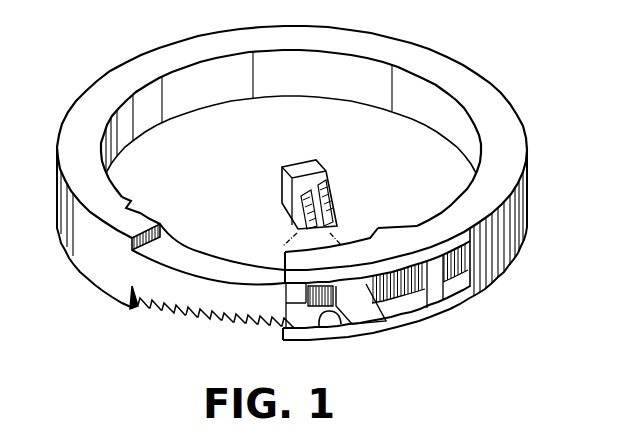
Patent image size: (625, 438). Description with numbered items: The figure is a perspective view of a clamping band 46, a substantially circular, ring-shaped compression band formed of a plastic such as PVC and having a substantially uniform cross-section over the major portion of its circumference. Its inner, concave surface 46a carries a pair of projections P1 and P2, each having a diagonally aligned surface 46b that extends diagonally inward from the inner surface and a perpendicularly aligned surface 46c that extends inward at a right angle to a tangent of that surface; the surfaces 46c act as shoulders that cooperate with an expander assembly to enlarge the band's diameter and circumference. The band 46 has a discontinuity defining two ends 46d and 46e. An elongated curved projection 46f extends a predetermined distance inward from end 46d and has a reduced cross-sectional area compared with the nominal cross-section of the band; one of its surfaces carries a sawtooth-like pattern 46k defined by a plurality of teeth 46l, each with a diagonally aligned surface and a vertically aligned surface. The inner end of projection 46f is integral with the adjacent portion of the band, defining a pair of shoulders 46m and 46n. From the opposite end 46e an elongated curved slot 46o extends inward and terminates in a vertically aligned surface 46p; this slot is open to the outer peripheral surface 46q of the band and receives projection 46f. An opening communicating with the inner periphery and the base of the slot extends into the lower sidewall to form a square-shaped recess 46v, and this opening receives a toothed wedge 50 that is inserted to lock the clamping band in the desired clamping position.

The clamping band 46 is at (146, 21).
The inner concave surface 46a is at (219, 90).
The diagonally aligned surface 46b is at (126, 194).
The perpendicularly aligned surface 46c is at (136, 201).
The end 46d is at (320, 325).
The end 46e is at (292, 336).
The elongated curved projection 46f is at (252, 254).
The sawtooth-like pattern 46k is at (178, 324).
The teeth 46l is at (214, 322).
The shoulder 46m is at (158, 243).
The shoulder 46n is at (137, 311).
The elongated curved slot 46o is at (413, 307).
The vertically aligned surface 46p is at (463, 288).
The outer peripheral surface 46q is at (489, 258).
The square-shaped recess 46v is at (362, 324).
The wedge 50 is at (298, 158).
The projection P1 is at (138, 191).
The projection P2 is at (379, 212).